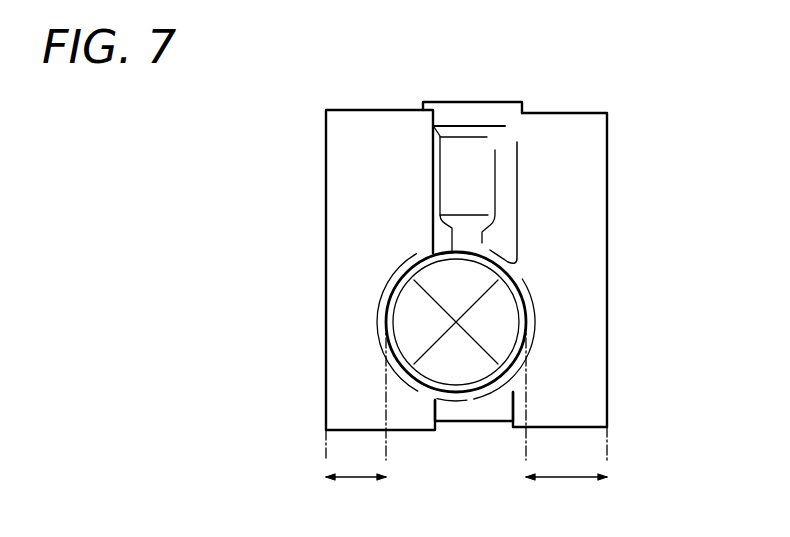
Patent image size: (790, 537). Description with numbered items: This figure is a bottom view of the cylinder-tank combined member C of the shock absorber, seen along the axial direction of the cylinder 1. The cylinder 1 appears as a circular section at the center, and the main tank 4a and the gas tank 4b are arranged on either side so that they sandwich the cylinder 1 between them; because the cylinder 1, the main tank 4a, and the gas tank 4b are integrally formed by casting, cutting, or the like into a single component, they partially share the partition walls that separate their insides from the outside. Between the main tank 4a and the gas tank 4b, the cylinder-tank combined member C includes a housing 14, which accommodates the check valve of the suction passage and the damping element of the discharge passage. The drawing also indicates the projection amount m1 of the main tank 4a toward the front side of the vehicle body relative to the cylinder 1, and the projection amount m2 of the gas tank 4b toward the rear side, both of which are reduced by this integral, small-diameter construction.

The housing 14 is at (466, 105).
The gas tank 4b is at (338, 218).
The main tank 4a is at (593, 220).
The cylinder 1 is at (468, 392).
The cylinder-tank combined member C is at (303, 342).
The projection amount m1 is at (566, 413).
The projection amount m2 is at (356, 413).